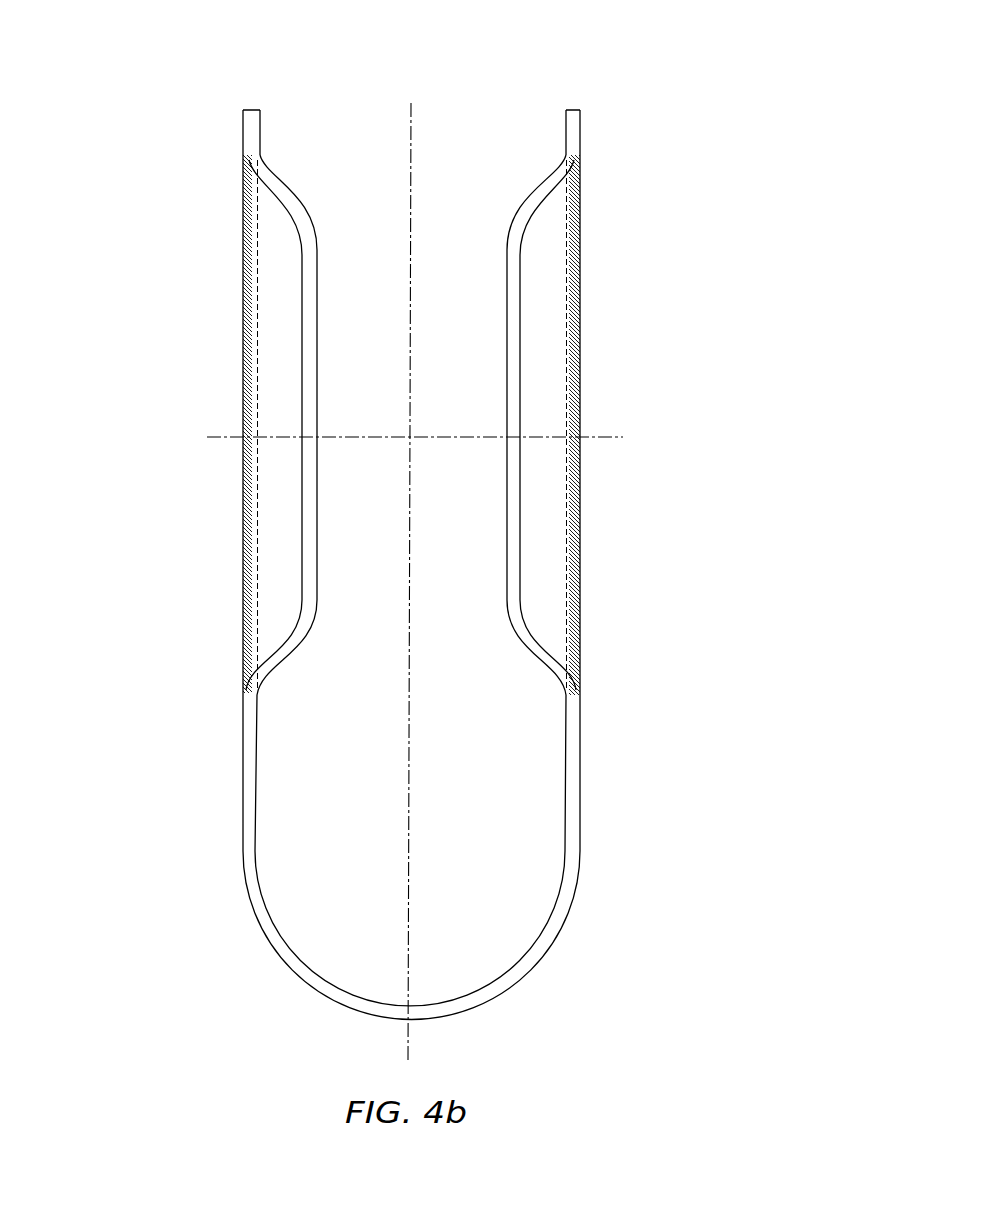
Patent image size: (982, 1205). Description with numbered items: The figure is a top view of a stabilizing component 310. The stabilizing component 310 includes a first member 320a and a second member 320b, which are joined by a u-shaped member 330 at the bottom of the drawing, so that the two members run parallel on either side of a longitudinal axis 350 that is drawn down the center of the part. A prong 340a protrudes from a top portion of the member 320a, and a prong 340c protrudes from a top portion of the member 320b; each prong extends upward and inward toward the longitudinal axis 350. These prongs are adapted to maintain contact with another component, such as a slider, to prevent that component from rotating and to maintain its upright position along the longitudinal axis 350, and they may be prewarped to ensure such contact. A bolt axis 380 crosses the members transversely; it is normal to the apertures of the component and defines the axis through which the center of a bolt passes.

The stabilizing component 310 is at (515, 92).
The member 320a is at (578, 793).
The member 320b is at (243, 770).
The u-shaped member 330 is at (510, 993).
The prong 340a is at (535, 306).
The prong 340c is at (290, 307).
The longitudinal axis 350 is at (408, 885).
The bolt axis 380 is at (223, 440).